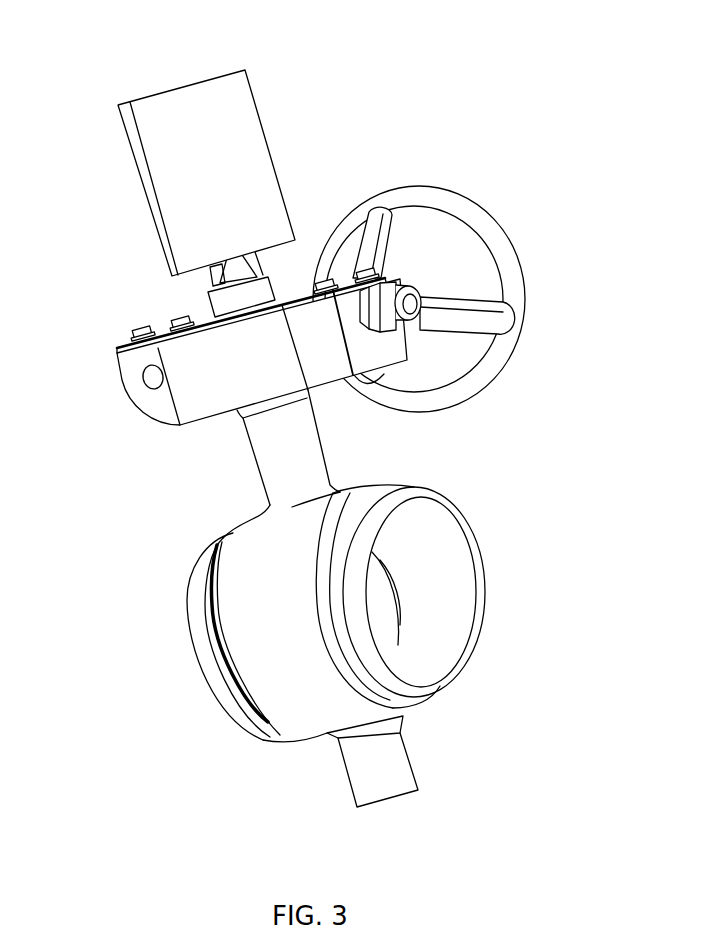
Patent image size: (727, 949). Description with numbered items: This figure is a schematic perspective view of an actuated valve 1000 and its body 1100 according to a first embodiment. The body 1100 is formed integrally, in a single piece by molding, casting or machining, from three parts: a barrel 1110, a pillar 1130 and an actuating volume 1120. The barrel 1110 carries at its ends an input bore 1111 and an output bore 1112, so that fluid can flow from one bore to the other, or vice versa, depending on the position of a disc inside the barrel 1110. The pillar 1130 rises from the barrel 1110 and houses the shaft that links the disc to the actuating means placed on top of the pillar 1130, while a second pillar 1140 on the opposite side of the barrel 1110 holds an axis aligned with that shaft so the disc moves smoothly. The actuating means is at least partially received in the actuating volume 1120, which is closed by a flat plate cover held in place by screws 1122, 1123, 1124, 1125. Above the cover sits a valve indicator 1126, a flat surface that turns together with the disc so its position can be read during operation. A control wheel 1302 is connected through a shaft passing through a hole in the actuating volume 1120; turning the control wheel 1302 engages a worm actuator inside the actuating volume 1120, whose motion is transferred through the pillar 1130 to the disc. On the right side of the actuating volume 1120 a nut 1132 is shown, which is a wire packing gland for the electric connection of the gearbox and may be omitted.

The actuated valve 1000 is at (487, 42).
The body 1100 is at (80, 333).
The barrel 1110 is at (288, 708).
The input bore 1111 is at (456, 640).
The output bore 1112 is at (195, 634).
The actuating volume 1120 is at (178, 405).
The screw 1122 is at (132, 338).
The screw 1123 is at (172, 327).
The screw 1124 is at (365, 268).
The screw 1125 is at (318, 280).
The valve indicator 1126 is at (250, 117).
The pillar 1130 is at (270, 460).
The nut 1132 is at (418, 290).
The pillar 1140 is at (403, 763).
The control wheel 1302 is at (465, 206).